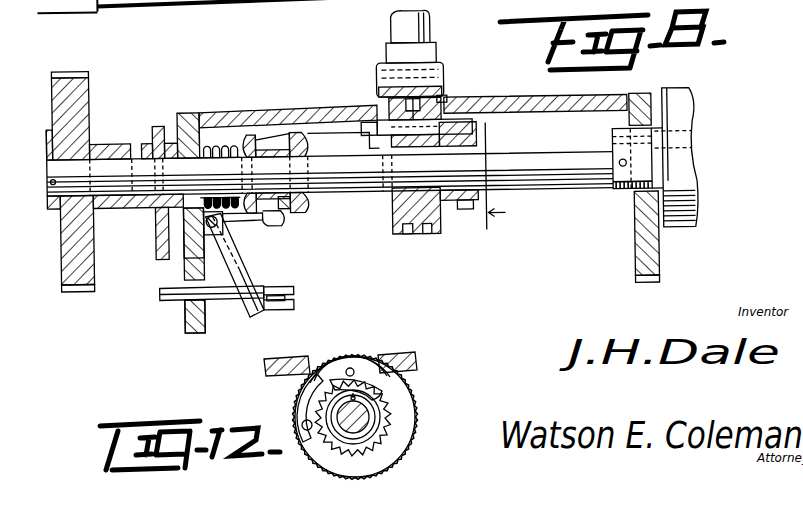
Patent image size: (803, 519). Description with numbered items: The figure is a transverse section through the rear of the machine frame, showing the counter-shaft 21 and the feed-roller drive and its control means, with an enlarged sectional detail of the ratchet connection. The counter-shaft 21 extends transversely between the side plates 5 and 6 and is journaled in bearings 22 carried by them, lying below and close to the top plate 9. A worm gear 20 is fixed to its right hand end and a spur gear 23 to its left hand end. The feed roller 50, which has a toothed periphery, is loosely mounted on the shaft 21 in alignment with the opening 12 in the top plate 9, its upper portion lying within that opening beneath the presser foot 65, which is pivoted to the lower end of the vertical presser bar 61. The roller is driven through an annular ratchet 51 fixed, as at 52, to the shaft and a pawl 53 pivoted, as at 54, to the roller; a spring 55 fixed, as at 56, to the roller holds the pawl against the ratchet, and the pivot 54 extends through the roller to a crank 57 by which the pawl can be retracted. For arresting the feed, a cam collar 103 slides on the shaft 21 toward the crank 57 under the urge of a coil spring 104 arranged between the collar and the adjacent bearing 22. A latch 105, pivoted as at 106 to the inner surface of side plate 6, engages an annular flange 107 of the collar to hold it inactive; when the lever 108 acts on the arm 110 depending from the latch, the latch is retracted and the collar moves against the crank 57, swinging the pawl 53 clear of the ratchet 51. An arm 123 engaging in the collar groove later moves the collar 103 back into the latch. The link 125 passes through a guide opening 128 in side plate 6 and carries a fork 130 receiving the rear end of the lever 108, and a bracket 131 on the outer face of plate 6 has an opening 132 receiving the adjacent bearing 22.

In FIG. 8, the side plate 5 is at (658, 270).
In FIG. 8, the side plate 6 is at (185, 328).
In FIG. 8, the top plate 9 is at (299, 114).
In FIG. 12, the top plate 9 is at (418, 362).
In FIG. 8, the opening 12 is at (388, 104).
In FIG. 8, the worm gear 20 is at (697, 203).
In FIG. 8, the counter-shaft 21 is at (572, 197).
In FIG. 12, the counter-shaft 21 is at (351, 426).
In FIG. 8, the bearings 22 is at (182, 115).
In FIG. 8, the spur gear 23 is at (88, 82).
In FIG. 8, the feed roller 50 is at (390, 218).
In FIG. 12, the feed roller 50 is at (396, 452).
In FIG. 8, the annular ratchet 51 is at (461, 230).
In FIG. 12, the annular ratchet 51 is at (385, 412).
In FIG. 8, the fixing 52 is at (485, 150).
In FIG. 12, the fixing 52 is at (380, 402).
In FIG. 8, the pawl 53 is at (443, 108).
In FIG. 12, the pawl 53 is at (368, 366).
In FIG. 12, the pivot 54 is at (350, 368).
In FIG. 12, the spring 55 is at (305, 397).
In FIG. 12, the fixing 56 is at (305, 431).
In FIG. 8, the crank 57 is at (360, 186).
In FIG. 8, the presser bar 61 is at (433, 39).
In FIG. 8, the presser foot 65 is at (447, 88).
In FIG. 8, the cam collar 103 is at (292, 210).
In FIG. 8, the spring 104 is at (228, 148).
In FIG. 8, the latch 105 is at (247, 229).
In FIG. 8, the pivot 106 is at (183, 240).
In FIG. 8, the annular flange 107 is at (297, 167).
In FIG. 8, the lever 108 is at (293, 301).
In FIG. 8, the arm 110 is at (233, 303).
In FIG. 8, the arm 123 is at (278, 224).
In FIG. 8, the link 125 is at (160, 302).
In FIG. 8, the guide opening 128 is at (190, 322).
In FIG. 8, the fork 130 is at (287, 313).
In FIG. 8, the bracket 131 is at (158, 128).
In FIG. 8, the opening 132 is at (153, 226).